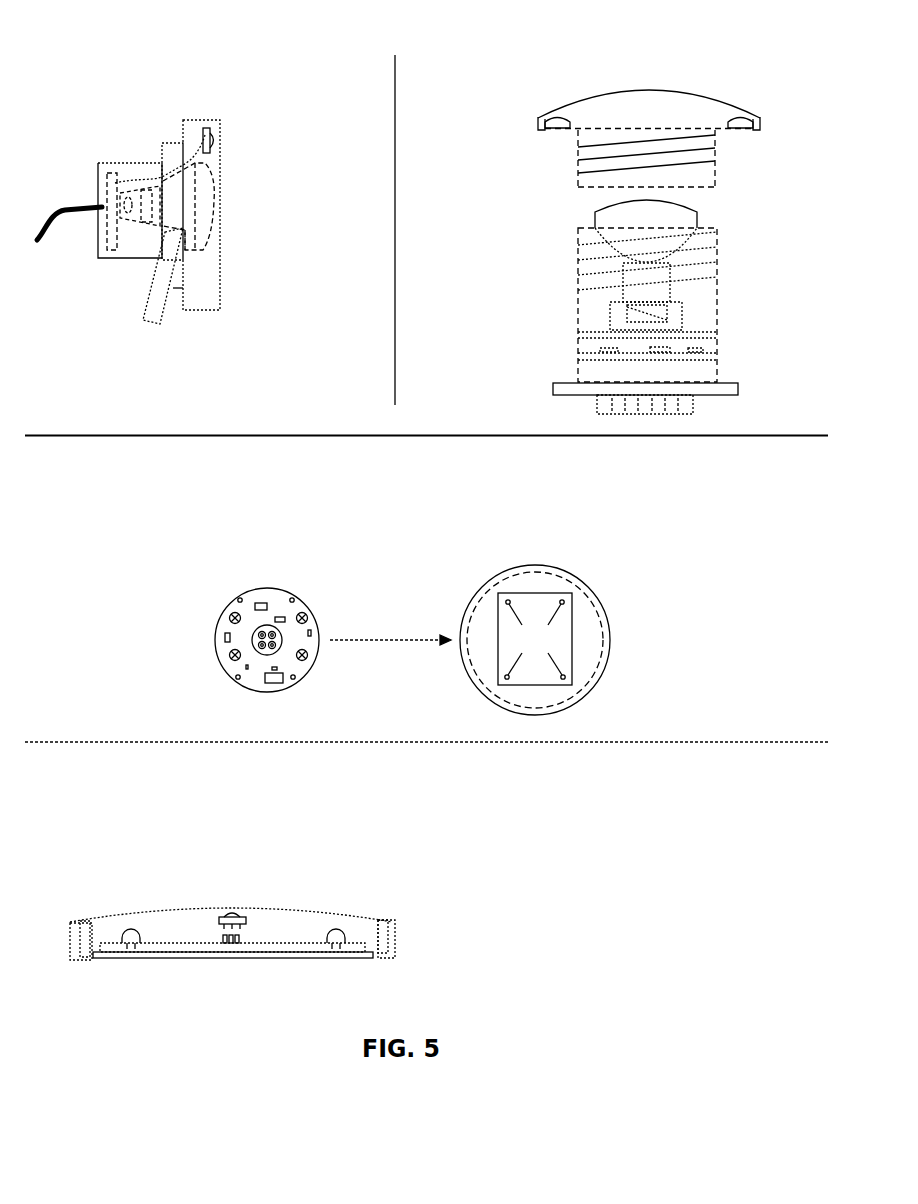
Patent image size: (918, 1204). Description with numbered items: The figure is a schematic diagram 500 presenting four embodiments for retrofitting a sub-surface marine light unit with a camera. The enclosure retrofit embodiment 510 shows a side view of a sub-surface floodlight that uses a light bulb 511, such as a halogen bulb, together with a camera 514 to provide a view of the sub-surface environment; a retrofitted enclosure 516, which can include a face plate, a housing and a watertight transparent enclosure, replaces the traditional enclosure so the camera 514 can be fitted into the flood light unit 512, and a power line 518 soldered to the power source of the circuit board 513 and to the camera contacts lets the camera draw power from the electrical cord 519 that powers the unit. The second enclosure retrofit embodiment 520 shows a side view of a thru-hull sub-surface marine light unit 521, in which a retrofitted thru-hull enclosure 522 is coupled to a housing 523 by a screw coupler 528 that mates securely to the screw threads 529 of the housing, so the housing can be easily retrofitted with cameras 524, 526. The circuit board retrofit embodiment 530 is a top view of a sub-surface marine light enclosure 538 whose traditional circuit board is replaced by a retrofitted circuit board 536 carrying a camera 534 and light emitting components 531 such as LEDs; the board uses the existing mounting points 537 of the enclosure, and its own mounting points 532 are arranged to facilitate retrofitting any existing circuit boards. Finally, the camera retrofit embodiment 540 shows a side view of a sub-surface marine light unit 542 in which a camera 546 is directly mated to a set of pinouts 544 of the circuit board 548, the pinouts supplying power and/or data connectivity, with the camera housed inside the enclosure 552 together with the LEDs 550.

The retrofit embodiments overview 500 is at (768, 22).
The enclosure retrofit embodiment 510 is at (332, 71).
The light bulb 511 is at (215, 205).
The flood light unit 512 is at (143, 260).
The circuit board 513 is at (107, 235).
The camera 514 is at (212, 140).
The retrofitted enclosure 516 is at (222, 300).
The power line 518 is at (148, 178).
The electrical cord 519 is at (63, 207).
The enclosure retrofit embodiment 520 is at (713, 71).
The sub-surface marine light unit 521 is at (627, 307).
The retrofitted thru-hull enclosure 522 is at (543, 128).
The housing 523 is at (738, 383).
The camera 524 is at (557, 118).
The camera 526 is at (747, 118).
The screw coupler 528 is at (715, 148).
The screw threads 529 is at (700, 275).
The circuit board retrofit embodiment 530 is at (365, 485).
The light emitting components 531 is at (232, 653).
The mounting points 532 is at (266, 603).
The camera 534 is at (263, 653).
The retrofitted circuit board 536 is at (301, 630).
The existing mounting points 537 is at (535, 639).
The sub-surface marine light enclosure 538 is at (586, 615).
The camera retrofit embodiment 540 is at (315, 784).
The sub-surface marine light unit 542 is at (300, 927).
The pinouts 544 is at (220, 940).
The camera 546 is at (283, 885).
The circuit board 548 is at (312, 942).
The LEDs 550 is at (342, 933).
The enclosure 552 is at (395, 947).